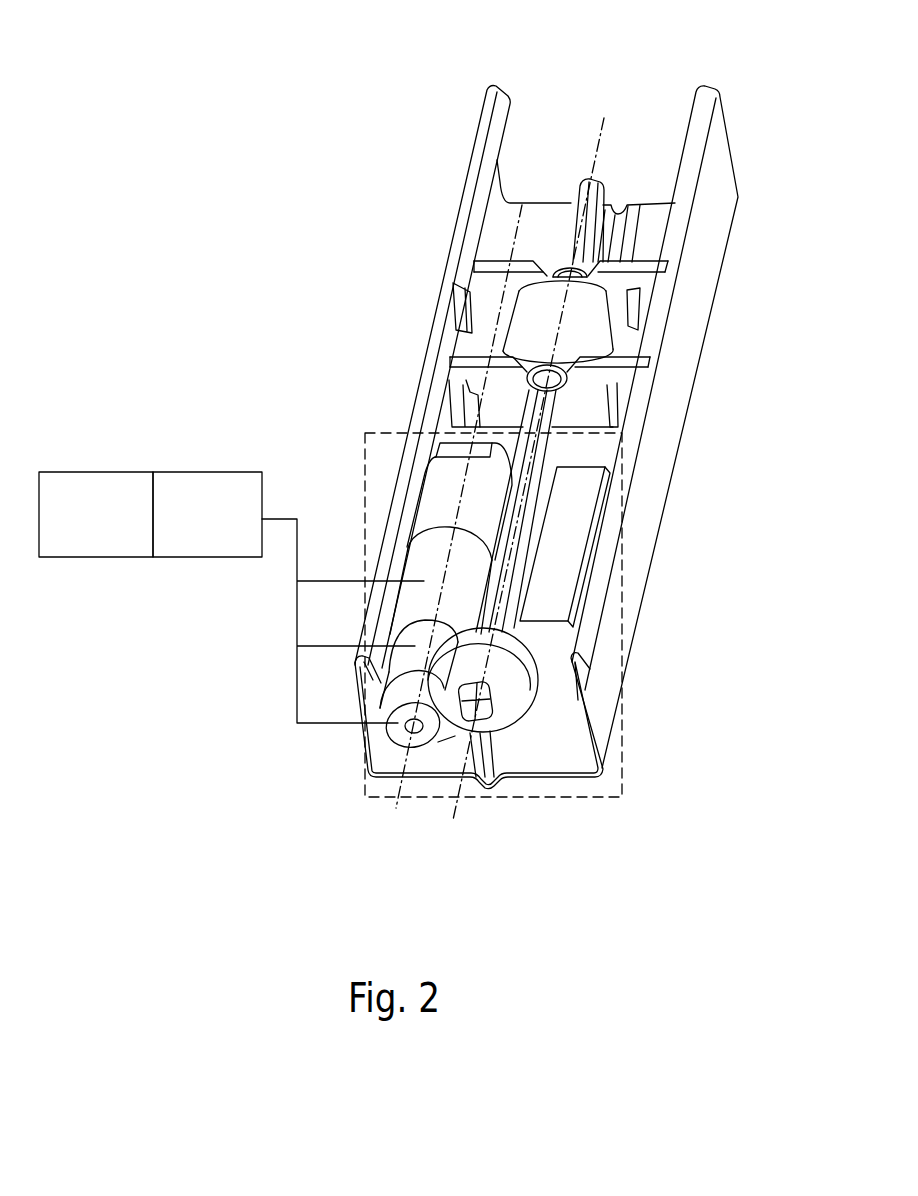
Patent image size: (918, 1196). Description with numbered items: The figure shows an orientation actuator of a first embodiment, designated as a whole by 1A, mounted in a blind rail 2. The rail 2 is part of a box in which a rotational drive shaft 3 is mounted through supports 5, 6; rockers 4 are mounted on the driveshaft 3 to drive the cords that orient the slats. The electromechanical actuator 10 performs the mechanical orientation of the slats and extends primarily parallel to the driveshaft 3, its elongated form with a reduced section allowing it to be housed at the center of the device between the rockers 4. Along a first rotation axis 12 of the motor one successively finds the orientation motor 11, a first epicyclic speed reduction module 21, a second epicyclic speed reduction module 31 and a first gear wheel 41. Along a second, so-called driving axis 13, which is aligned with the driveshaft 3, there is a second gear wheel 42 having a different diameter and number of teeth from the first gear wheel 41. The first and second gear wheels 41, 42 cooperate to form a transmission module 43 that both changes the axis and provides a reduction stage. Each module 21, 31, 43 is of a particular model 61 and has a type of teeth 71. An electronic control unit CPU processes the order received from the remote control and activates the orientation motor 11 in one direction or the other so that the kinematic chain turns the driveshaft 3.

The drive unit 1A is at (358, 278).
The rail 2 is at (693, 288).
The rotational drive shaft 3 is at (550, 410).
The rockers 4 is at (583, 330).
The support 5 is at (466, 373).
The support 6 is at (551, 272).
The electromechanical actuator 10 is at (622, 617).
The orientation motor 11 is at (448, 481).
The first rotation axis 12 is at (517, 256).
The second driving axis 13 is at (607, 120).
The first epicyclic speed reduction module 21 is at (430, 552).
The second epicyclic speed reduction module 31 is at (417, 650).
The first gear wheel 41 is at (400, 732).
The second gear wheel 42 is at (517, 707).
The transmission module 43 is at (416, 752).
The model 61 is at (96, 514).
The type of teeth 71 is at (288, 597).
The electronic control unit CPU is at (570, 528).